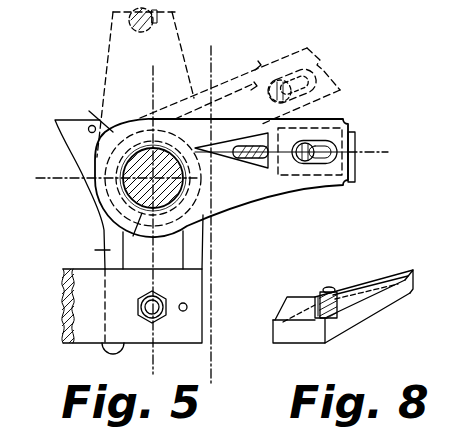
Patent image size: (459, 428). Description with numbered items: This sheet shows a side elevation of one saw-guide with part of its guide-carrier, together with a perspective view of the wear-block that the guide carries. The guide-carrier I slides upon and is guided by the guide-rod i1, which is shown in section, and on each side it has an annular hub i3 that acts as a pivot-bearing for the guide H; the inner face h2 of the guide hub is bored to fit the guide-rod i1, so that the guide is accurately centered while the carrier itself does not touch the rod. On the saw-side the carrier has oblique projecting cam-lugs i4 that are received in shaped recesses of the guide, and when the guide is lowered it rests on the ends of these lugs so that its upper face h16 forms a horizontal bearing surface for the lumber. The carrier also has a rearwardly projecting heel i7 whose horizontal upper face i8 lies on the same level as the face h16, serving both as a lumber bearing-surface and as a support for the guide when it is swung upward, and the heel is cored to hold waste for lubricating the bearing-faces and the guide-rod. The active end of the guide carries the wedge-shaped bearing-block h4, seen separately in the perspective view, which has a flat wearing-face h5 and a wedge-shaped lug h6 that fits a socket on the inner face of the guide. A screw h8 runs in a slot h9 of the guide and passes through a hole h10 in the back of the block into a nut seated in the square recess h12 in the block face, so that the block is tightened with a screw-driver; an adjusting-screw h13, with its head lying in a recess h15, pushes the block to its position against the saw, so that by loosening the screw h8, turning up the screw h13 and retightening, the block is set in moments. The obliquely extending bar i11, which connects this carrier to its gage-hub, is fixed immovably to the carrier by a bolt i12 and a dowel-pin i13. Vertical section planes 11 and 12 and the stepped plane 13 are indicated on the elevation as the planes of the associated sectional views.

In FIG. 5, the vertical section plane 11 is at (165, 75).
In FIG. 5, the vertical section plane 12 is at (217, 60).
In FIG. 5, the stepped section plane 13 is at (50, 165).
In FIG. 5, the guide H is at (248, 194).
In FIG. 5, the guide-carrier I is at (91, 165).
In FIG. 5, the inner face of guide hub h2 is at (153, 250).
In FIG. 5, the wedge-shaped bearing-block h4 is at (353, 133).
In FIG. 8, the wedge-shaped bearing-block h4 is at (374, 302).
In FIG. 8, the flat wearing-face h5 is at (318, 343).
In FIG. 8, the wedge-shaped lug h6 is at (340, 281).
In FIG. 5, the screw h8 is at (303, 154).
In FIG. 5, the slot h9 is at (323, 155).
In FIG. 8, the hole h10 is at (326, 290).
In FIG. 8, the square recess h12 is at (350, 324).
In FIG. 5, the adjusting-screw h13 is at (253, 157).
In FIG. 5, the recess h15 is at (198, 154).
In FIG. 5, the upper face of guide h16 is at (282, 131).
In FIG. 5, the guide-rod i1 is at (170, 194).
In FIG. 5, the annular hub i3 is at (104, 203).
In FIG. 5, the cam-lug i4 is at (262, 68).
In FIG. 5, the heel i7 is at (56, 121).
In FIG. 5, the horizontal upper face of heel i8 is at (102, 119).
In FIG. 5, the obliquely extending bar i11 is at (84, 358).
In FIG. 5, the bolt i12 is at (146, 306).
In FIG. 5, the dowel-pin i13 is at (183, 312).